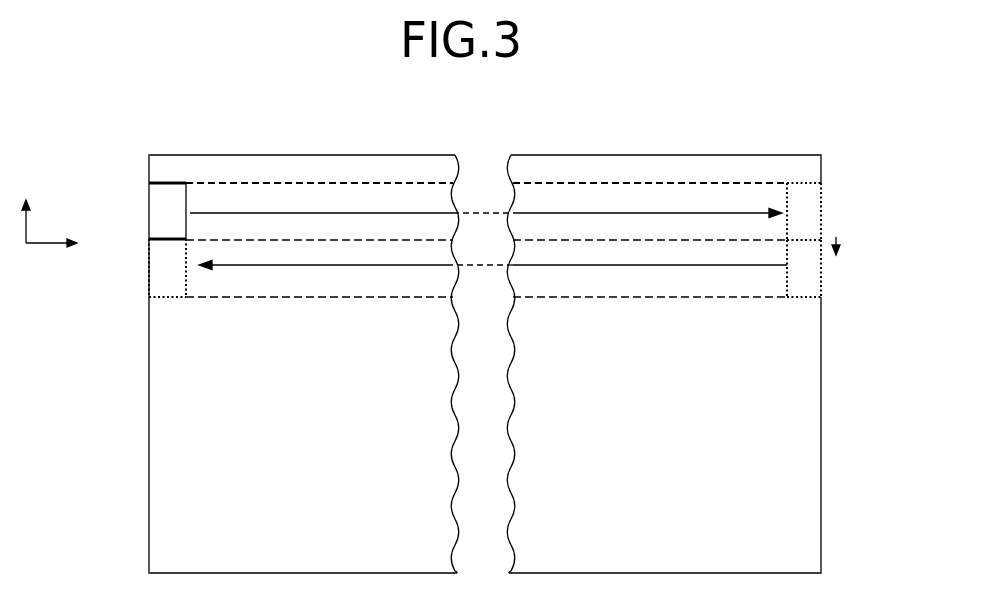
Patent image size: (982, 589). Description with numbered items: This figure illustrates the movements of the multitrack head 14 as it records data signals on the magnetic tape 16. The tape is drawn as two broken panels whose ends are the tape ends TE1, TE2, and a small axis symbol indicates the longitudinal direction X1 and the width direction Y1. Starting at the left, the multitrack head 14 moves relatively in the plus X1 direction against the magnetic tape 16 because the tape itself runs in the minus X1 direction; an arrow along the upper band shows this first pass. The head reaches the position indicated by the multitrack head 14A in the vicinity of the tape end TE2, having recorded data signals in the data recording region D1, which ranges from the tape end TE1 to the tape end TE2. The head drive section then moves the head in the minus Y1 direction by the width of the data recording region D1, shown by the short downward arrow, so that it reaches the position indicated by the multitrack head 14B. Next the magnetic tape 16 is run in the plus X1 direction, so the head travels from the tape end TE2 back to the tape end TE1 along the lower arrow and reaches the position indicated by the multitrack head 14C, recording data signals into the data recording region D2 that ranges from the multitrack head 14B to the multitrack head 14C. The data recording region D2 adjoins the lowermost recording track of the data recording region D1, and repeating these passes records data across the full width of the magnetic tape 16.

The multitrack head 14 is at (153, 211).
The multitrack head position near tape end TE2 14A is at (802, 190).
The multitrack head position after downward shift 14B is at (803, 290).
The multitrack head position near tape end TE1 14C is at (157, 274).
The magnetic tape 16 is at (216, 168).
The data recording region D1 is at (348, 198).
The data recording region D2 is at (205, 288).
The tape end TE1 is at (149, 473).
The tape end TE2 is at (822, 413).
The X1 direction X1 is at (65, 244).
The Y1 direction Y1 is at (32, 210).